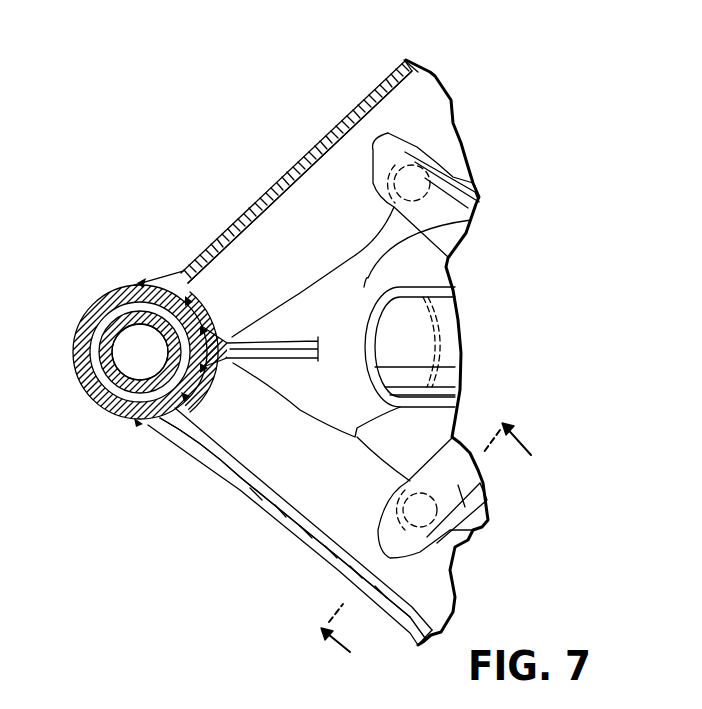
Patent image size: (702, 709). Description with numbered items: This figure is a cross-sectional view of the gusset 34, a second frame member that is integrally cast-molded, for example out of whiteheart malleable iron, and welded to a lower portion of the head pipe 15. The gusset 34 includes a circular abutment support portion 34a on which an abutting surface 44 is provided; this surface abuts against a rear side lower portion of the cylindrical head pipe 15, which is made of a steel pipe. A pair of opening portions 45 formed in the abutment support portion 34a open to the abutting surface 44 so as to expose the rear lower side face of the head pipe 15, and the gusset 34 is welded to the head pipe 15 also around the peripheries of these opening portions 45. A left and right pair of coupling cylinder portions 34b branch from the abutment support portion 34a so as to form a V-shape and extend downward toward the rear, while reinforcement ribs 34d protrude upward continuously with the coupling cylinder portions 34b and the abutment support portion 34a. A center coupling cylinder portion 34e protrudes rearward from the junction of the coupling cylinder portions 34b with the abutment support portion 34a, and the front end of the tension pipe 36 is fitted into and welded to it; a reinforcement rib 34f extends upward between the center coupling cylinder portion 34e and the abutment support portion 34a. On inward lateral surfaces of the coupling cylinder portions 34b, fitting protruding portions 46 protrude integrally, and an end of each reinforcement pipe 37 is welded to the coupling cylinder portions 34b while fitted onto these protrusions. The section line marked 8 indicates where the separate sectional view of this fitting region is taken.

The gusset 34 is at (288, 151).
The abutment support portion 34a is at (169, 265).
The coupling cylinder portions 34b is at (357, 104).
The reinforcement ribs 34d is at (250, 206).
The center coupling cylinder portion 34e is at (464, 230).
The reinforcement rib 34f is at (262, 350).
The head pipe 15 is at (100, 308).
The tension pipe 36 is at (454, 343).
The reinforcement pipes 37 is at (471, 190).
The abutting surface 44 is at (125, 426).
The opening portions 45 is at (210, 316).
The fitting protruding portions 46 is at (431, 167).
The section line 8- 8 is at (426, 549).